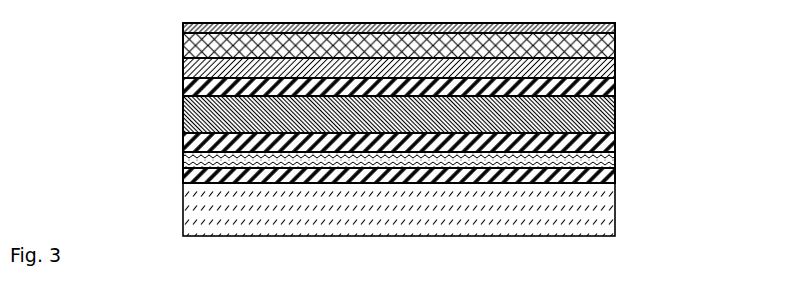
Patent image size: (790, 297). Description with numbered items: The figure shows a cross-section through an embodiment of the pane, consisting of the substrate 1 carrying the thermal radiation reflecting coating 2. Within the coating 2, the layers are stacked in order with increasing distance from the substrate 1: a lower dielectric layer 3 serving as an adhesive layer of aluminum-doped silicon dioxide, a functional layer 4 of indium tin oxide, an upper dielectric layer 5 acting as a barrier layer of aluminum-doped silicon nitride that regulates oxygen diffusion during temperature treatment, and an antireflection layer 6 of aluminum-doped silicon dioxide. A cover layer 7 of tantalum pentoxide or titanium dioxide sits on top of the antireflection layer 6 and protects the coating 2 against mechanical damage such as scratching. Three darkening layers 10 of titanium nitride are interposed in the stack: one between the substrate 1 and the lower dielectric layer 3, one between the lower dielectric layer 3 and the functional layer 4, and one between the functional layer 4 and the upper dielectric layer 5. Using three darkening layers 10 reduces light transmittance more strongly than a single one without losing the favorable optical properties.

The substrate 1 is at (200, 209).
The thermal radiation reflecting coating 2 is at (183, 23).
The lower dielectric layer 3 is at (615, 160).
The functional layer 4 is at (615, 114).
The upper dielectric layer 5 is at (600, 67).
The antireflection layer 6 is at (600, 45).
The cover layer 7 is at (600, 28).
The darkening layer 10 is at (610, 88).